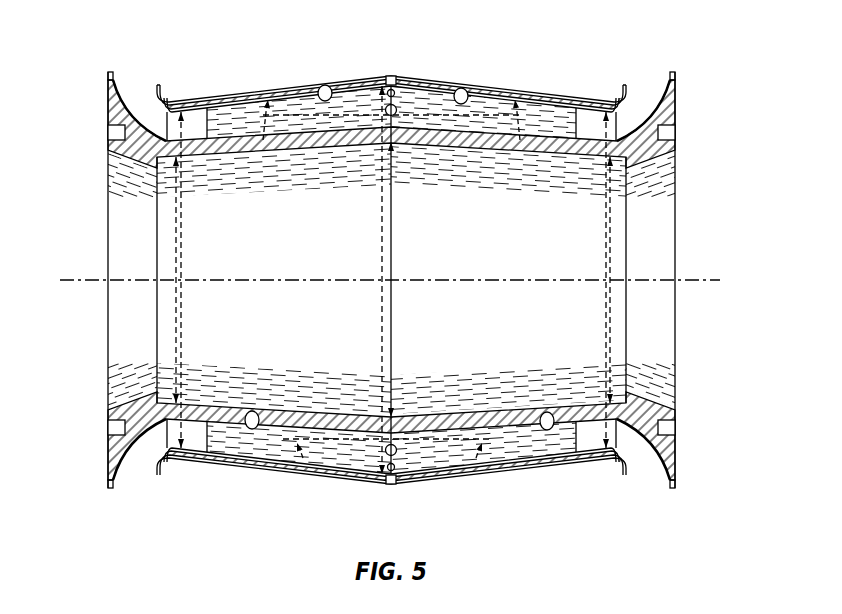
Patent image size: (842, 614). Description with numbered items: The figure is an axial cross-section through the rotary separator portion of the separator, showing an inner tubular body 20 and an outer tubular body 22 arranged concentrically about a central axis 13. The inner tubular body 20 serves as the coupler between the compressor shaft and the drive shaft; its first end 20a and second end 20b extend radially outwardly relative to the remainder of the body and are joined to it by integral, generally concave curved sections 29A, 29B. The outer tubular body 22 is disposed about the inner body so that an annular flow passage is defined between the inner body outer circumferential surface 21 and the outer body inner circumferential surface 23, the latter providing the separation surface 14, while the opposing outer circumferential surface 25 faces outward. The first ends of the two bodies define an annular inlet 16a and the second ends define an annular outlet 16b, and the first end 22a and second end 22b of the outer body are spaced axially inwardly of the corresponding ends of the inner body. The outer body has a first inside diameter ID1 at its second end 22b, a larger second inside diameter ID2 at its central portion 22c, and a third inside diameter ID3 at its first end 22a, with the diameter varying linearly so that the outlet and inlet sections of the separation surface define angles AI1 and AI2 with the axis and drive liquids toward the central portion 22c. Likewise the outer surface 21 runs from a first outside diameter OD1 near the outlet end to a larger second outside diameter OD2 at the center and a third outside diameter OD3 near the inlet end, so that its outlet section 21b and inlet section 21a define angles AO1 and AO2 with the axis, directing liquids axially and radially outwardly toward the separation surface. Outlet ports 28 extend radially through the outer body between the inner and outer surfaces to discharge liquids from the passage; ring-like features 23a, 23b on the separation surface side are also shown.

The central axis 13 is at (344, 280).
The separation surface 14 is at (441, 97).
The inlet 16a is at (137, 470).
The outlet 16b is at (648, 470).
The inner tubular body 20 is at (212, 403).
The first end of inner tubular body 20a is at (108, 90).
The second end of inner tubular body 20b is at (676, 98).
The outer circumferential surface 21 is at (512, 430).
The inlet section of outer surface 21a is at (247, 411).
The outlet section of outer surface 21b is at (547, 412).
The outer tubular body 22 is at (278, 477).
The first end of outer tubular body 22a is at (157, 86).
The second end of outer tubular body 22b is at (625, 87).
The central portion of outer tubular body 22c is at (385, 75).
The inner circumferential surface 23 is at (300, 97).
The first ring 23a is at (326, 85).
The second ring 23b is at (462, 88).
The outer circumferential surface of outer tubular body 25 is at (248, 93).
The outlet port 28 is at (397, 110).
The first concave curved section 29A is at (113, 113).
The second concave curved section 29B is at (670, 118).
The first outside diameter OD1 is at (610, 253).
The second outside diameter OD2 is at (392, 258).
The third outside diameter OD3 is at (176, 251).
The first inside diameter ID1 is at (606, 307).
The second inside diameter ID2 is at (382, 311).
The third inside diameter ID3 is at (181, 321).
The outlet section angle of separation surface AI1 is at (511, 84).
The inlet section angle of separation surface AI2 is at (273, 84).
The outlet section angle of outer surface AO1 is at (487, 409).
The inlet section angle of outer surface AO2 is at (300, 409).